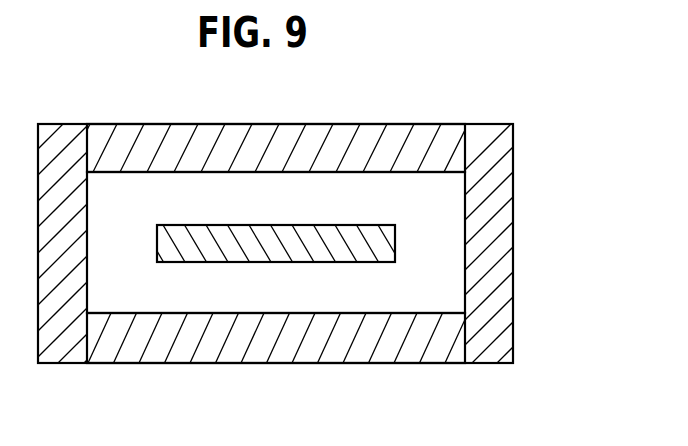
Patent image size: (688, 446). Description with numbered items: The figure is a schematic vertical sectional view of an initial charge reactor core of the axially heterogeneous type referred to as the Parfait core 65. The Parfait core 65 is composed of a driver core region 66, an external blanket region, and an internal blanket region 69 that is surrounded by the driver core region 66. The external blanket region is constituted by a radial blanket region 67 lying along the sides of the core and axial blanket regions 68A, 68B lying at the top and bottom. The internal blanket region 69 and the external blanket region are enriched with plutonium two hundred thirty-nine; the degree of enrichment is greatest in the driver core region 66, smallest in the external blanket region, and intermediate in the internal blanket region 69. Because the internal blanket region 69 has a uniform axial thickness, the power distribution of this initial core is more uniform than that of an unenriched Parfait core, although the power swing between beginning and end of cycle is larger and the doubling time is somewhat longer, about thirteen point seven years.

The Parfait core 65 is at (426, 123).
The driver core region 66 is at (305, 178).
The radial blanket region 67 is at (514, 237).
The axial blanket region 68A is at (145, 132).
The axial blanket region 68B is at (257, 357).
The internal blanket region 69 is at (238, 233).